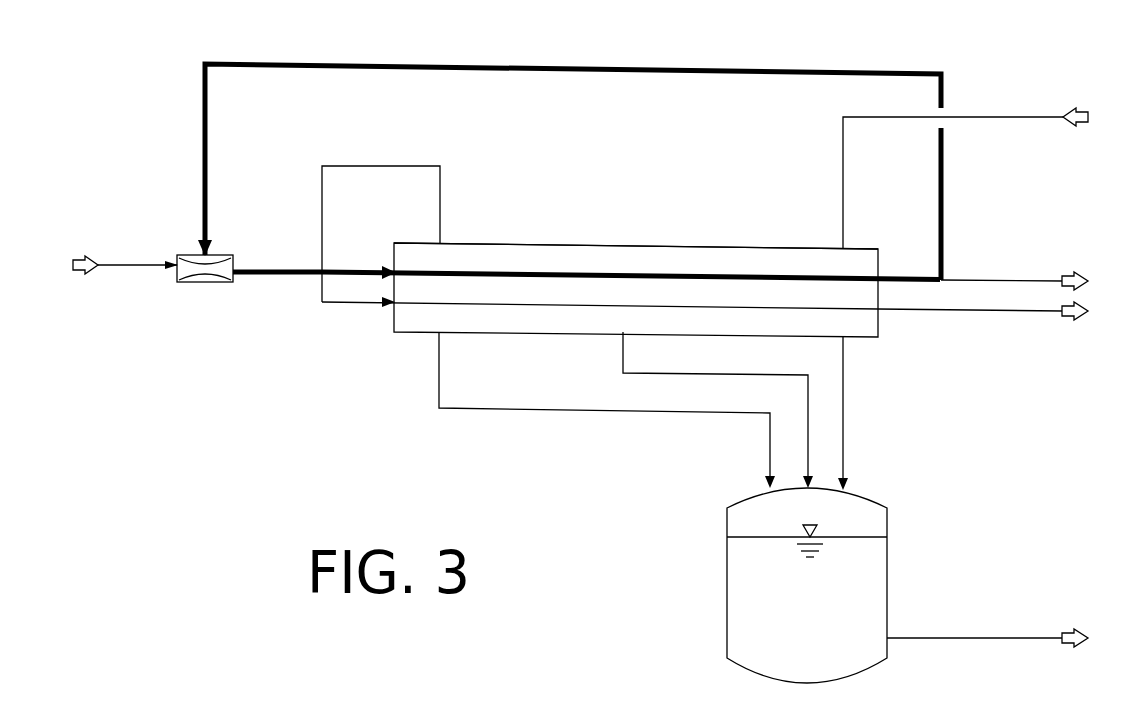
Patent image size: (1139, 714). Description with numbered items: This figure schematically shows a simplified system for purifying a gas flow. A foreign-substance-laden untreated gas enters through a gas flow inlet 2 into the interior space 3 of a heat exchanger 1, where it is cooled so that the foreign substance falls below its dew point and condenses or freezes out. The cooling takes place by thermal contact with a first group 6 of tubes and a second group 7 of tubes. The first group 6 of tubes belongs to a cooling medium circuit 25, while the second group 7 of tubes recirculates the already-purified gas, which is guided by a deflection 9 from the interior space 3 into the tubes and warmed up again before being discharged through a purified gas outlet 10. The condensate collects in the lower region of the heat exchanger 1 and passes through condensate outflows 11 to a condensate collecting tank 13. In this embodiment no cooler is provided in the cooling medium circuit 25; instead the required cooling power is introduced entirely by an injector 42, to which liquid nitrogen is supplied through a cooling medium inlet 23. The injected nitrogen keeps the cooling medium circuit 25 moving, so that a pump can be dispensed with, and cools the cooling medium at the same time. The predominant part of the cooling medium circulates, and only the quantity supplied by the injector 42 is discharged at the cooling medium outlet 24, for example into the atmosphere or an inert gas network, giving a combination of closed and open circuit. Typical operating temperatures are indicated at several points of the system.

The heat exchanger 1 is at (609, 243).
The gas flow inlet 2 is at (1050, 117).
The interior space 3 is at (697, 262).
The first group of tubes 6 is at (506, 272).
The second group of tubes 7 is at (745, 305).
The deflection 9 is at (322, 218).
The purified gas outlet 10 is at (1043, 312).
The condensate outflows 11 is at (440, 351).
The condensate collecting tank 13 is at (887, 568).
The cooling medium inlet 23 is at (112, 266).
The cooling medium outlet 24 is at (1040, 282).
The cooling medium circuit 25 is at (693, 70).
The injector 42 is at (207, 285).